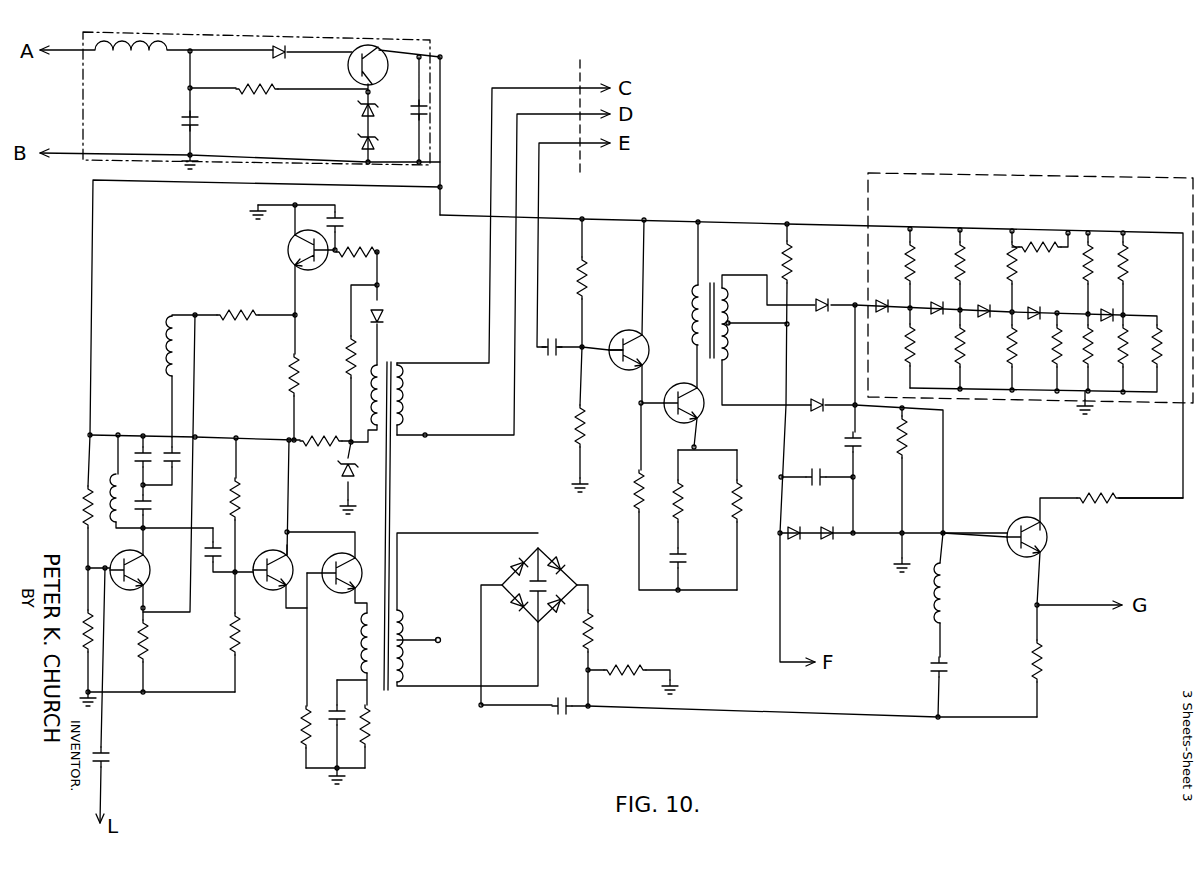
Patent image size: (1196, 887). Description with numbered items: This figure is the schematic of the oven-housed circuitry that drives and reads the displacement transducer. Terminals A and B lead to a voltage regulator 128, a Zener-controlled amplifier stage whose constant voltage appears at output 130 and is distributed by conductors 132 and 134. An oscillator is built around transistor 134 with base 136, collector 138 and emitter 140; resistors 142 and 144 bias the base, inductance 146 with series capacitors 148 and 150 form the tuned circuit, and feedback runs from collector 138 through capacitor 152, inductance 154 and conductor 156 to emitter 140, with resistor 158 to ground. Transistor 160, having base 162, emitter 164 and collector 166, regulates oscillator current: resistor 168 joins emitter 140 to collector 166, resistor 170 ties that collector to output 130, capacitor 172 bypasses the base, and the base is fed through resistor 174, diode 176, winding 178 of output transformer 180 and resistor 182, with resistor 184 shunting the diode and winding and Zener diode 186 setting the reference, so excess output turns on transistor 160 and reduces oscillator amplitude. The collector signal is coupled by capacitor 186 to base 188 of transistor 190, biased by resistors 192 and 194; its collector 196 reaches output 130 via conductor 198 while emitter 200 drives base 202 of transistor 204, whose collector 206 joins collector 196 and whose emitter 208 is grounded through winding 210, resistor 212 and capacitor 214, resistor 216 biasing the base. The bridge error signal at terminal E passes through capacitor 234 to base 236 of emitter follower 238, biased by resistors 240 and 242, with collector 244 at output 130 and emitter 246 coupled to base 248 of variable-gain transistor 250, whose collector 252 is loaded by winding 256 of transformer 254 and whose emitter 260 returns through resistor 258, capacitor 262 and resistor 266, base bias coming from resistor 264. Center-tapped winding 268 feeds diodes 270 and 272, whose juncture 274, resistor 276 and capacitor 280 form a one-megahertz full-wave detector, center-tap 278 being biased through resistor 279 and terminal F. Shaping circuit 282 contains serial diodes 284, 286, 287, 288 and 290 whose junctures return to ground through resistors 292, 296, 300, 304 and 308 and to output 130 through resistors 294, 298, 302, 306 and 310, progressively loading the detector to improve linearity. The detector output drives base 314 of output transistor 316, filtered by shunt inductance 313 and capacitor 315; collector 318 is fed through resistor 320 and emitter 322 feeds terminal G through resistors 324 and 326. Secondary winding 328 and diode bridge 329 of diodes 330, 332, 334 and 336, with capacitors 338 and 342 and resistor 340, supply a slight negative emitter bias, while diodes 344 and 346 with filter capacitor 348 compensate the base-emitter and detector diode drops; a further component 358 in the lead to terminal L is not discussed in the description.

The voltage regulator 128 is at (86, 96).
The regulator output 130 is at (443, 92).
The conductor 132 is at (206, 185).
The oscillator transistor 134 is at (441, 219).
The base 136 is at (123, 555).
The collector 138 is at (146, 555).
The emitter 140 is at (140, 591).
The resistor 142 is at (92, 638).
The resistor 144 is at (85, 497).
The inductance 146 is at (106, 474).
The capacitor 148 is at (146, 445).
The capacitor 150 is at (152, 508).
The capacitor 152 is at (181, 458).
The inductance 154 is at (166, 350).
The conductor 156 is at (200, 612).
The resistor 158 is at (149, 668).
The transistor 160 is at (292, 263).
The base 162 is at (332, 258).
The emitter 164 is at (289, 246).
The collector 166 is at (302, 277).
The resistor 168 is at (250, 320).
The resistor 170 is at (286, 372).
The capacitor 172 is at (342, 223).
The resistor 174 is at (380, 252).
The diode 176 is at (384, 312).
The primary winding 178 is at (381, 360).
The output transformer 180 is at (402, 361).
The resistor 182 is at (326, 448).
The resistor 184 is at (345, 350).
The Zener diode 186 is at (350, 476).
The base 188 is at (266, 561).
The transistor 190 is at (269, 545).
The resistor 192 is at (229, 498).
The resistor 194 is at (240, 640).
The collector 196 is at (290, 561).
The conductor 198 is at (288, 505).
The emitter 200 is at (283, 590).
The base 202 is at (312, 604).
The transistor 204 is at (336, 603).
The collector 206 is at (370, 533).
The emitter 208 is at (399, 608).
The winding 210 is at (361, 652).
The resistor 212 is at (376, 713).
The capacitor 214 is at (337, 705).
The resistor 216 is at (296, 729).
The capacitor 234 is at (551, 357).
The base 236 is at (621, 365).
The transistor 238 is at (627, 330).
The resistor 240 is at (586, 431).
The resistor 242 is at (589, 261).
The collector 244 is at (645, 330).
The emitter 246 is at (639, 386).
The base 248 is at (679, 421).
The transistor 250 is at (690, 387).
The collector 252 is at (704, 411).
The transformer 254 is at (707, 279).
The winding 256 is at (694, 290).
The resistor 258 is at (676, 516).
The emitter 260 is at (698, 432).
The capacitor 262 is at (686, 560).
The resistor 264 is at (636, 508).
The resistor 266 is at (733, 519).
The center-tapped winding 268 is at (731, 352).
The diode 270 is at (825, 300).
The diode 272 is at (819, 400).
The juncture 274 is at (855, 318).
The resistor 276 is at (897, 458).
The center-tap 278 is at (733, 322).
The resistor 279 is at (796, 256).
The capacitor 280 is at (845, 442).
The shaping circuit 282 is at (864, 188).
The diode 284 is at (882, 300).
The diode 286 is at (940, 302).
The diode 287 is at (988, 305).
The diode 288 is at (1063, 282).
The diode 290 is at (1113, 311).
The resistor 292 is at (920, 340).
The resistor 294 is at (912, 243).
The resistor 296 is at (962, 345).
The resistor 298 is at (962, 243).
The resistor 300 is at (1015, 345).
The resistor 302 is at (1027, 243).
The resistor 304 is at (1060, 362).
The resistor 306 is at (1092, 260).
The resistor 308 is at (1127, 362).
The resistor 310 is at (1132, 262).
The shunt filter inductance 313 is at (930, 608).
The base 314 is at (1007, 529).
The capacitor 315 is at (930, 665).
The transistor 316 is at (1050, 533).
The collector 318 is at (1026, 520).
The resistor 320 is at (1099, 490).
The emitter 322 is at (1035, 556).
The resistor 324 is at (1030, 658).
The resistor 326 is at (626, 667).
The secondary winding 328 is at (404, 652).
The full wave diode bridge 329 is at (581, 576).
The diode 330 is at (512, 571).
The diode 332 is at (562, 562).
The diode 334 is at (561, 609).
The diode 336 is at (521, 610).
The filter capacitor 338 is at (541, 566).
The resistor 340 is at (596, 632).
The capacitor 342 is at (558, 713).
The diode 344 is at (797, 540).
The diode 346 is at (830, 546).
The capacitor 348 is at (818, 482).
The capacitor 358 is at (107, 752).